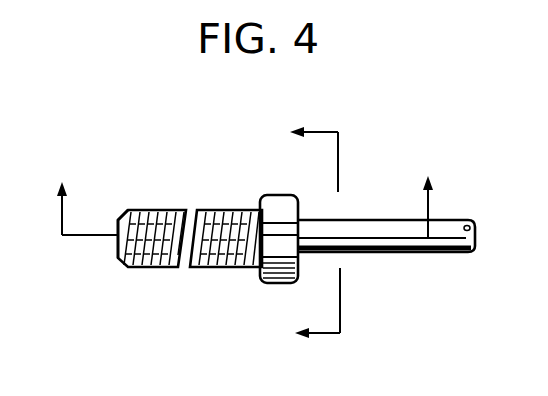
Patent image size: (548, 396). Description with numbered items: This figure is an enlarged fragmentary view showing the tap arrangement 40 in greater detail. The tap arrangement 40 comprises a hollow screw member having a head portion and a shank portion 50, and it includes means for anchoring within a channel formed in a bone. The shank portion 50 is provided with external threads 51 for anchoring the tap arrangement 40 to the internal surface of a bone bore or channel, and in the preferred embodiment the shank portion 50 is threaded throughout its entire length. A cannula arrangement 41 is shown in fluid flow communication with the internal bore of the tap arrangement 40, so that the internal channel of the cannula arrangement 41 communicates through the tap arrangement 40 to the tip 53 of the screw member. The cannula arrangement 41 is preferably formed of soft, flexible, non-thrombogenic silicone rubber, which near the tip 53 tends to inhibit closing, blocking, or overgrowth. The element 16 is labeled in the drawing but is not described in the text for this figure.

The threaded fastener assembly 16 is at (366, 178).
The threaded portion 40 is at (172, 188).
The shaft 41 is at (427, 265).
The first thread section 50 is at (153, 268).
The second thread section 51 is at (215, 268).
The chamfered end 53 is at (118, 250).